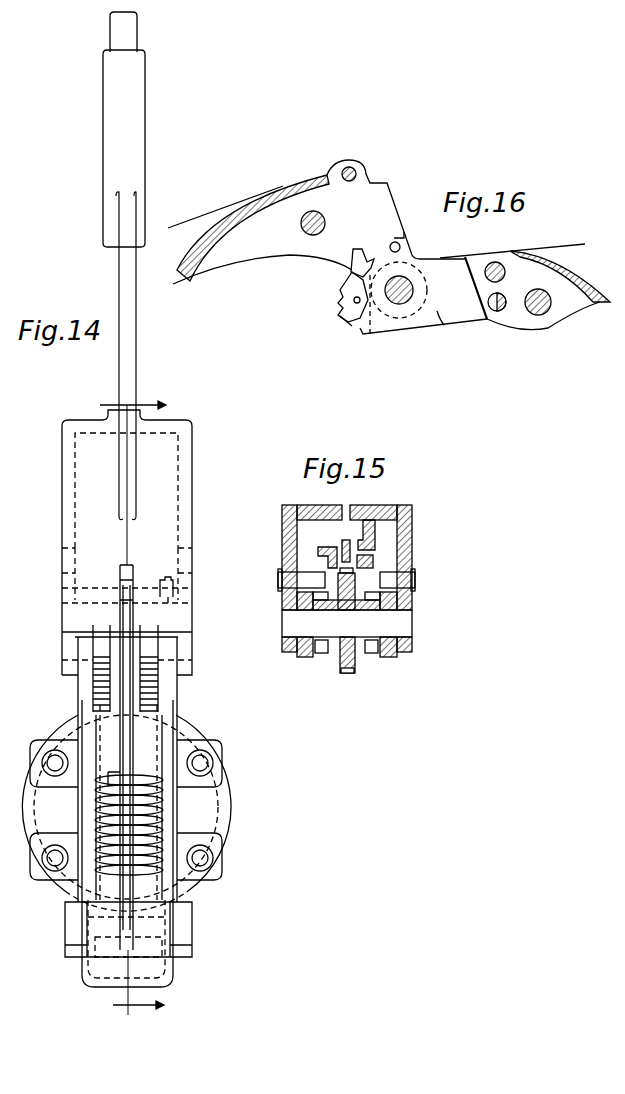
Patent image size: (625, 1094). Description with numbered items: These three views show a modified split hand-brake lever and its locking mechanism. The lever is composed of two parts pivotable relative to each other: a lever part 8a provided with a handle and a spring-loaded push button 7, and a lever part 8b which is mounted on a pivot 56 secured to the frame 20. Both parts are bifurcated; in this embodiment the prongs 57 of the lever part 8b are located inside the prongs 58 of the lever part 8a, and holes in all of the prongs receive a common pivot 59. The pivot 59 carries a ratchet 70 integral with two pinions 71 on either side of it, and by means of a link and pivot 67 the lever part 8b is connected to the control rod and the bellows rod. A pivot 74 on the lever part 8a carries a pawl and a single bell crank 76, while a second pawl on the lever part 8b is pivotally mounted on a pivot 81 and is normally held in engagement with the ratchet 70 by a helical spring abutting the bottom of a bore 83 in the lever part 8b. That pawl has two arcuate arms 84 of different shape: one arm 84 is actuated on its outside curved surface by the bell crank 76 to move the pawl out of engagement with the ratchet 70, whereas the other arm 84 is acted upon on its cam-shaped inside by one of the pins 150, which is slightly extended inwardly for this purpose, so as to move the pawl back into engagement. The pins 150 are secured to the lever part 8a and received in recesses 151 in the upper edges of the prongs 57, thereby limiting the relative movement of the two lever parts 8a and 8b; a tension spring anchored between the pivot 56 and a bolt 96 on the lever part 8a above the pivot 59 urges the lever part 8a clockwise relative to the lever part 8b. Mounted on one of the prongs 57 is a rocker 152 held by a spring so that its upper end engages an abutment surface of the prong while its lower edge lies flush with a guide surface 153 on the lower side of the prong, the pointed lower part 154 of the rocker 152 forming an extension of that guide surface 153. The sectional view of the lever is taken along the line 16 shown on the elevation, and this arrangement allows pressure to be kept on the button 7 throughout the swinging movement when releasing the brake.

In FIG. 14, the push button 7 is at (137, 31).
In FIG. 14, the lever part 8a is at (118, 268).
In FIG. 16, the lever part 8a is at (204, 221).
In FIG. 14, the lever part 8b is at (168, 850).
In FIG. 16, the lever part 8b is at (598, 305).
In FIG. 14, the section line 16 is at (122, 709).
In FIG. 14, the frame 20 is at (158, 989).
In FIG. 14, the pivot 56 is at (189, 931).
In FIG. 15, the prongs 57 is at (303, 657).
In FIG. 16, the prongs 57 is at (452, 326).
In FIG. 15, the prongs 58 is at (282, 546).
In FIG. 16, the prongs 58 is at (386, 206).
In FIG. 15, the pivot 59 is at (405, 623).
In FIG. 16, the pivot 67 is at (523, 309).
In FIG. 15, the ratchet 70 is at (348, 676).
In FIG. 15, the pinions 71 is at (318, 660).
In FIG. 16, the pivot 74 is at (300, 222).
In FIG. 15, the bell crank 76 is at (378, 528).
In FIG. 16, the pivot 81 is at (494, 262).
In FIG. 16, the bore 83 is at (505, 297).
In FIG. 15, the arcuate arms 84 is at (333, 553).
In FIG. 14, the bolt 96 is at (186, 598).
In FIG. 16, the bolt 96 is at (364, 166).
In FIG. 15, the pins 150 is at (280, 580).
In FIG. 16, the pins 150 is at (392, 243).
In FIG. 15, the recesses 151 is at (297, 598).
In FIG. 16, the recesses 151 is at (353, 273).
In FIG. 16, the rocker 152 is at (350, 313).
In FIG. 16, the guide surface 153 is at (405, 331).
In FIG. 16, the pointed lower part 154 is at (337, 313).